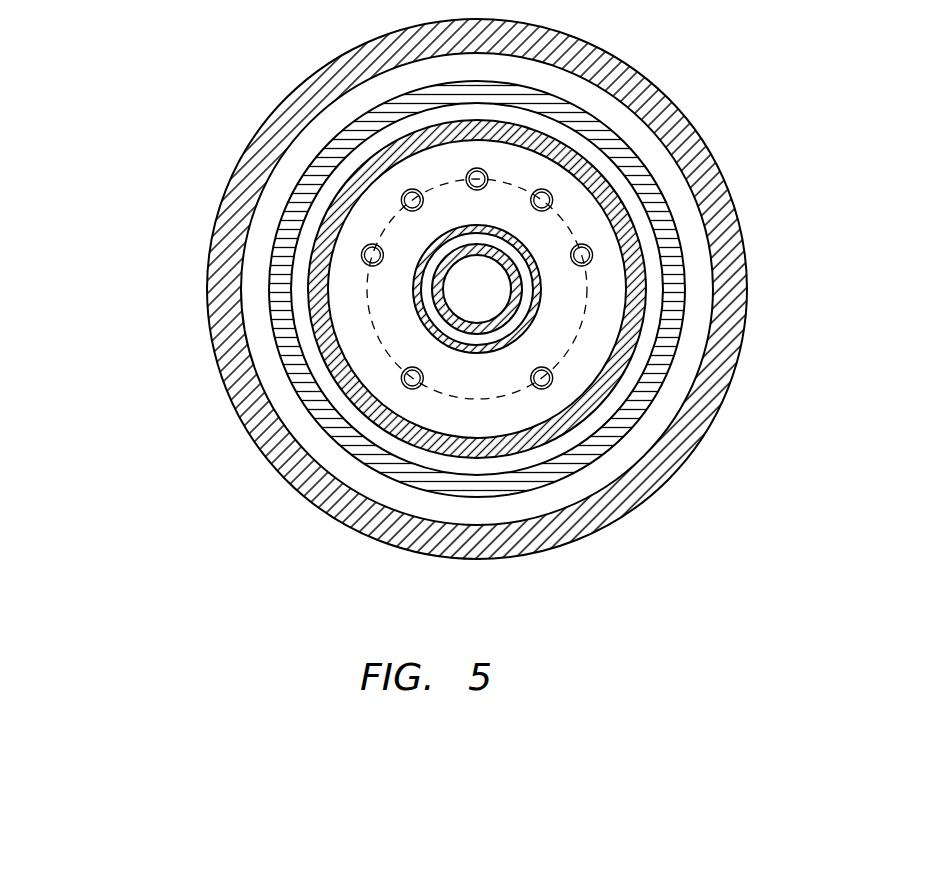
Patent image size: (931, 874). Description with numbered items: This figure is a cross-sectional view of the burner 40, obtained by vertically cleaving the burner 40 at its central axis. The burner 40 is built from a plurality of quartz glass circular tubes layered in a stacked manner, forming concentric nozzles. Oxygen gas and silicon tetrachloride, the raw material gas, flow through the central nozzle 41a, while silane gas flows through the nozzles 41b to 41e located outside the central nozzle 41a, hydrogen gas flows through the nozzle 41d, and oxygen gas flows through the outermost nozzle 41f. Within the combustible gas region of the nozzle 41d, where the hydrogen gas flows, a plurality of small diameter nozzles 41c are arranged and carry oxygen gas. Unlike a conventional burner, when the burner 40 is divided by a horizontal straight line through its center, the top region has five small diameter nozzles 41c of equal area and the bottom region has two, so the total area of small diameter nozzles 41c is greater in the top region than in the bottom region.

The burner 40 is at (625, 64).
The central nozzle 41a is at (462, 268).
The nozzle 41b is at (410, 294).
The small diameter nozzles 41c is at (404, 380).
The nozzle 41d is at (427, 412).
The nozzle 41e is at (427, 460).
The outermost nozzle 41f is at (420, 505).